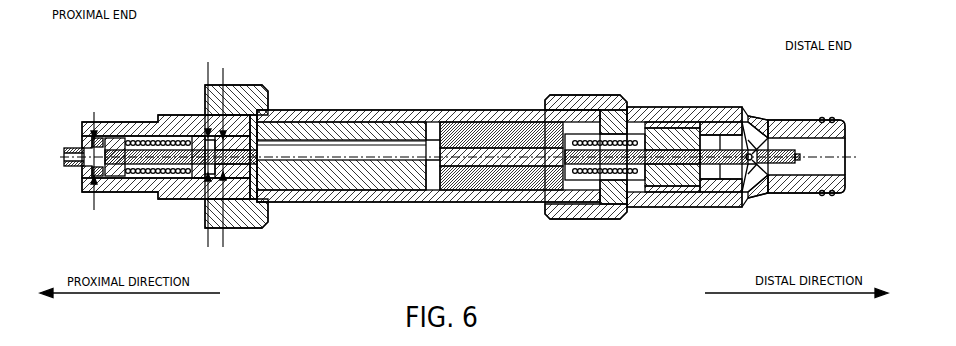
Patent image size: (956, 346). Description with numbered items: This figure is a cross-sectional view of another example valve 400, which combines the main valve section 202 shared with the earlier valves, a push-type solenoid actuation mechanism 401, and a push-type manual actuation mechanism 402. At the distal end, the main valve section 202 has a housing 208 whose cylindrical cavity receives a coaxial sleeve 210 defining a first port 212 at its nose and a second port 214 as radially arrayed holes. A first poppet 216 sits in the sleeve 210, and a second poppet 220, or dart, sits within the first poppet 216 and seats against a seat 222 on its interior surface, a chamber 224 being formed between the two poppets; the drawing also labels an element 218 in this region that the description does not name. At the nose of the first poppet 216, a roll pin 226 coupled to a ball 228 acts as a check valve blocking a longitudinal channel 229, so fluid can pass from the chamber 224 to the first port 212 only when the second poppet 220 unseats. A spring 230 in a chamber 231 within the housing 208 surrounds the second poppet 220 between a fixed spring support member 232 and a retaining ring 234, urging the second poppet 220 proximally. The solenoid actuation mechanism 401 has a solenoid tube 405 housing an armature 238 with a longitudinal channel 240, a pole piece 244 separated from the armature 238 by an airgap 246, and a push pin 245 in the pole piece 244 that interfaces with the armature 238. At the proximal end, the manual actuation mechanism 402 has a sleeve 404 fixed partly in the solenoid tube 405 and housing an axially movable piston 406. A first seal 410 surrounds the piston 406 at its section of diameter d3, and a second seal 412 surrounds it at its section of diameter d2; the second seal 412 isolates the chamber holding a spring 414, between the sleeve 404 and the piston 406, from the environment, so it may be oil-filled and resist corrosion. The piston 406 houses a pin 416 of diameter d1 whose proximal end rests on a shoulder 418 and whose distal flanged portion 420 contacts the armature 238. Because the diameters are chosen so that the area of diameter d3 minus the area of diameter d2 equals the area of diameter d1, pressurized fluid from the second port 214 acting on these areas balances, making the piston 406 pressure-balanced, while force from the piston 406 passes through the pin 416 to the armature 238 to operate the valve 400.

The valve 400 is at (78, 89).
The push-type solenoid actuation mechanism 401 is at (362, 85).
The push-type manual actuation mechanism 402 is at (141, 64).
The sleeve 404 is at (148, 122).
The solenoid tube 405 is at (437, 122).
The piston 406 is at (126, 139).
The first seal 410 is at (199, 136).
The second seal 412 is at (95, 180).
The spring 414 is at (182, 174).
The pin 416 is at (121, 165).
The shoulder 418 is at (108, 140).
The flanged portion 420 is at (263, 209).
The diameter d1 is at (225, 74).
The diameter d2 is at (93, 114).
The diameter d3 is at (210, 62).
The armature 238 is at (316, 128).
The longitudinal channel 240 is at (391, 145).
The pole piece 244 is at (484, 126).
The push pin 245 is at (513, 166).
The airgap 246 is at (434, 193).
The housing 208 is at (564, 94).
The retaining ring 234 is at (580, 140).
The spring 230 is at (631, 136).
The chamber 231 is at (623, 181).
The spring support member 232 is at (652, 128).
The second poppet 220 is at (686, 161).
The chamber 224 is at (734, 174).
The main valve section 202 is at (716, 86).
The second port 214 is at (752, 114).
The first poppet 216 is at (751, 164).
The seat 222 is at (753, 166).
The longitudinal channel 229 is at (751, 151).
The ball 228 is at (770, 151).
The roll pin 226 is at (798, 154).
The sleeve 210 is at (845, 118).
The bore 218 is at (783, 178).
The first port 212 is at (855, 167).